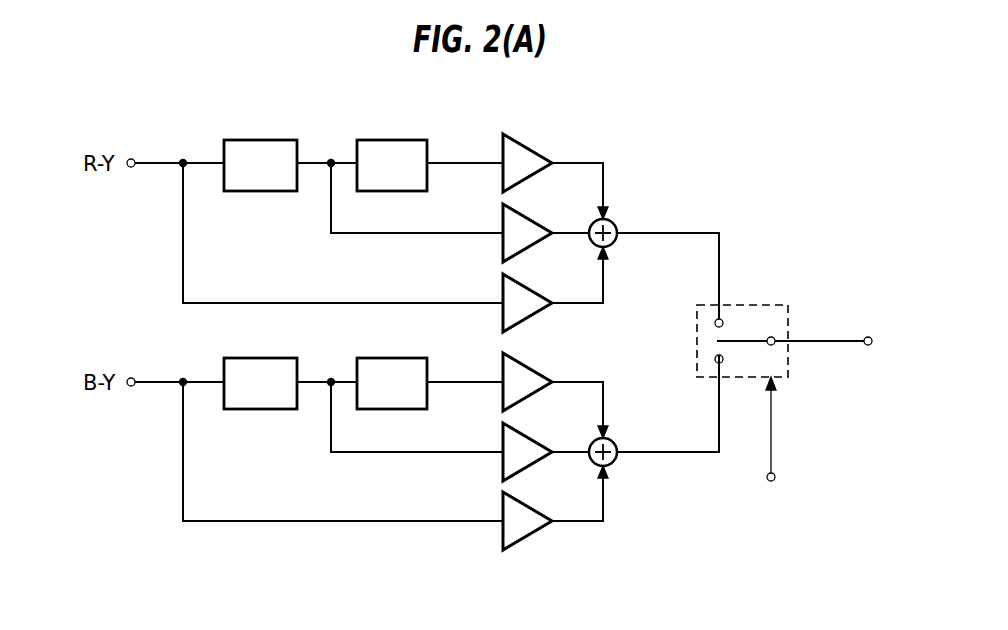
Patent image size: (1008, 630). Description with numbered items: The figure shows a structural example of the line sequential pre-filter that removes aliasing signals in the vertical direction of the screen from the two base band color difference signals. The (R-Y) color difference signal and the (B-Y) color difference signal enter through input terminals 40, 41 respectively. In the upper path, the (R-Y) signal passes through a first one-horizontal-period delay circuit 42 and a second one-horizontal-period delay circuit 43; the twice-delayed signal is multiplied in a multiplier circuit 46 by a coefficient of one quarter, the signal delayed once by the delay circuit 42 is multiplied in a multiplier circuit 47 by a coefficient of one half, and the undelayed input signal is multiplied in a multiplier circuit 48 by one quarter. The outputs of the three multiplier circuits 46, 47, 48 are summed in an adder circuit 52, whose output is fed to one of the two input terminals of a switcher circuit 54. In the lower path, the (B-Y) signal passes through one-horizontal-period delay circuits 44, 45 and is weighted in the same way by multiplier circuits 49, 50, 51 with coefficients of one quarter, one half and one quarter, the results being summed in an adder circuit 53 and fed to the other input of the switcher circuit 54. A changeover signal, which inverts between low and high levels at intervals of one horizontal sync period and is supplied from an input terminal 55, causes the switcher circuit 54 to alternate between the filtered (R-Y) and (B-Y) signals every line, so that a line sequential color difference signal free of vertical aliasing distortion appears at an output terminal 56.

The input terminal 40 is at (133, 159).
The input terminal 41 is at (133, 378).
The 1H delay circuit 42 is at (252, 140).
The 1H delay circuit 43 is at (384, 140).
The 1H delay circuit 44 is at (252, 358).
The 1H delay circuit 45 is at (384, 358).
The multiplier circuit 46 is at (511, 134).
The multiplier circuit 47 is at (511, 204).
The multiplier circuit 48 is at (511, 274).
The multiplier circuit 49 is at (511, 353).
The multiplier circuit 50 is at (511, 423).
The multiplier circuit 51 is at (511, 492).
The adder circuit 52 is at (613, 223).
The adder circuit 53 is at (613, 442).
The switcher circuit 54 is at (756, 305).
The input terminal 55 is at (775, 477).
The output terminal 56 is at (870, 337).